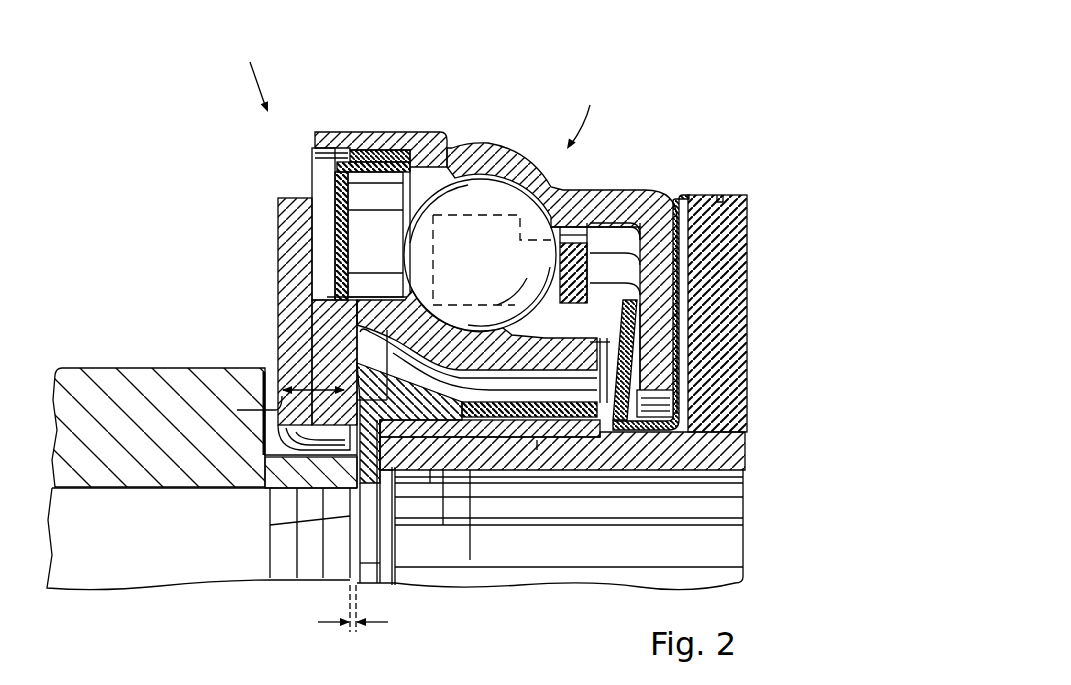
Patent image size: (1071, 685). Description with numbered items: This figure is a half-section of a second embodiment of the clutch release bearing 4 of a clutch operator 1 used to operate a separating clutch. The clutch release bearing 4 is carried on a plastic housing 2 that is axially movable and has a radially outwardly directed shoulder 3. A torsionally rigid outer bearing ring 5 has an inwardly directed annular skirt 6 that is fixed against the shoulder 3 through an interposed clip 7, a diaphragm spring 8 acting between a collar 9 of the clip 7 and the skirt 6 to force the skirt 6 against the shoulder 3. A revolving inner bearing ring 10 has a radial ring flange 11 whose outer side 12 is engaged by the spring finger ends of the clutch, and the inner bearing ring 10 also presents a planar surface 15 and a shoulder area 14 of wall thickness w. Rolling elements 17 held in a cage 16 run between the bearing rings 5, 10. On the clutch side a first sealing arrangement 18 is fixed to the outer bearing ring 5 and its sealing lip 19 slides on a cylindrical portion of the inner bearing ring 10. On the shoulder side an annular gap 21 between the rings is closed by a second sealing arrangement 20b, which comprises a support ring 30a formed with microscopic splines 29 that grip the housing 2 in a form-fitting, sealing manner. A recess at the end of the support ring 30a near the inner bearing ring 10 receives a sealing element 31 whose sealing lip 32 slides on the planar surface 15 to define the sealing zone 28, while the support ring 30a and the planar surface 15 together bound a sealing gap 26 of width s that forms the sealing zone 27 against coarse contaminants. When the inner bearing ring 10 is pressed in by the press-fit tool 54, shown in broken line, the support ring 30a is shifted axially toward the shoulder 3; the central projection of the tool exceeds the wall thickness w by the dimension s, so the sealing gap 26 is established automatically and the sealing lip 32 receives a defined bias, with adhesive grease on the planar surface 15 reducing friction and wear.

The clutch operator 1 is at (424, 358).
The housing 2 is at (720, 455).
The shoulder 3 is at (735, 268).
The clutch release bearing 4 is at (424, 337).
The outer bearing ring 5 is at (505, 160).
The annular skirt 6 is at (662, 293).
The clip 7 is at (735, 233).
The diaphragm spring 8 is at (665, 370).
The collar 9 is at (665, 420).
The inner bearing ring 10 is at (645, 392).
The radial ring flange 11 is at (283, 230).
The outer side 12 is at (318, 272).
The shoulder area 14 is at (293, 453).
The planar surface 15 is at (355, 306).
The cage 16 is at (572, 243).
The rolling elements 17 is at (481, 185).
The first sealing arrangement 18 is at (343, 131).
The sealing lip 19 is at (346, 292).
The annular gap 21 is at (660, 335).
The sealing gap 26 is at (350, 520).
The sealing zone 27 is at (350, 470).
The sealing zone 28 is at (360, 352).
The microscopic splines 29 is at (497, 478).
The sealing element 31 is at (293, 433).
The sealing lip 32 is at (377, 345).
The press-fit tool 54 is at (100, 380).
The second sealing arrangement 20b is at (430, 483).
The support ring 30a is at (538, 450).